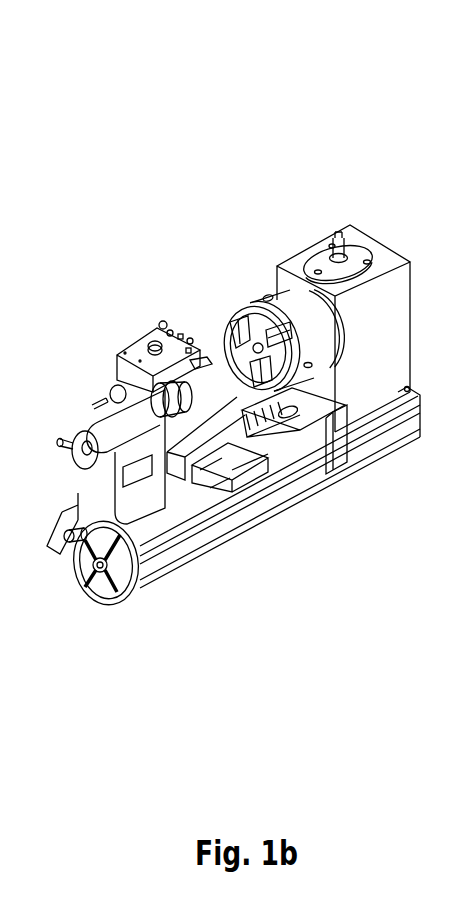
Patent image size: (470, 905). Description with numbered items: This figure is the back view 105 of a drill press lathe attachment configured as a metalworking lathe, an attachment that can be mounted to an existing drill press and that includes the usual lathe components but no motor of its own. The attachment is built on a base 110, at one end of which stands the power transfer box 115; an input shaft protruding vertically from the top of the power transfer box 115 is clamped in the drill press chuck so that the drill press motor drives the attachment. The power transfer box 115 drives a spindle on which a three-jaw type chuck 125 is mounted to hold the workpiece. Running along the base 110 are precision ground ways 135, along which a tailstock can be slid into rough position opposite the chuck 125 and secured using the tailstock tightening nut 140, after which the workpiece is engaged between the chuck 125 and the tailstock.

The back view 105 is at (391, 84).
The base 110 is at (260, 527).
The power transfer box 115 is at (293, 252).
The 3-jaw type chuck 125 is at (247, 297).
The precision ground ways 135 is at (270, 395).
The tailstock tightening nut 140 is at (128, 478).